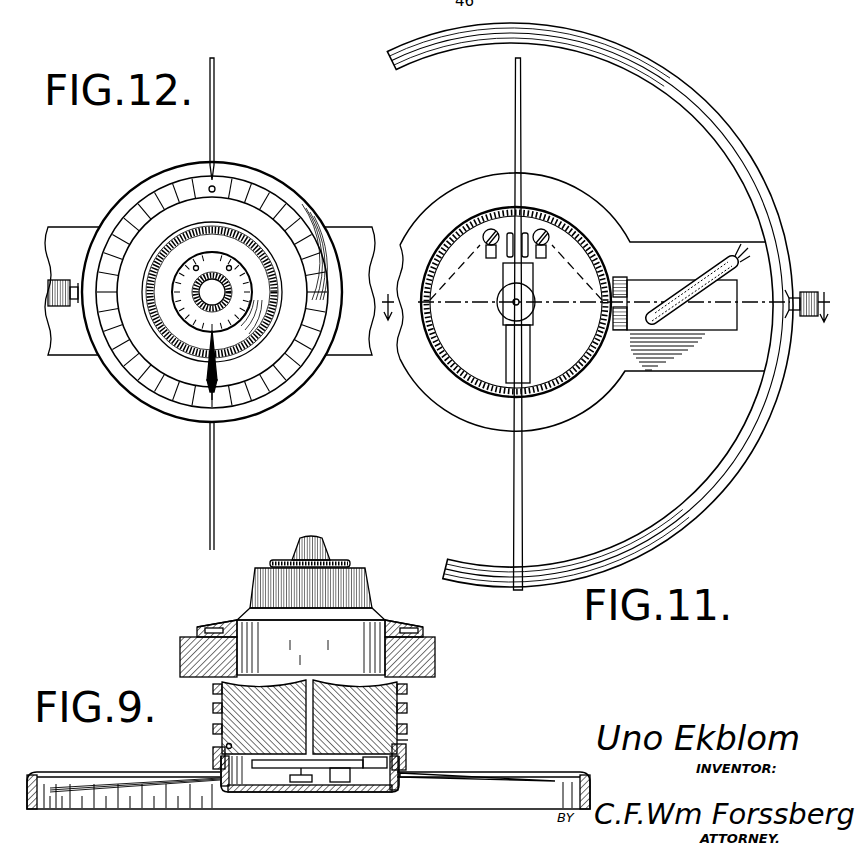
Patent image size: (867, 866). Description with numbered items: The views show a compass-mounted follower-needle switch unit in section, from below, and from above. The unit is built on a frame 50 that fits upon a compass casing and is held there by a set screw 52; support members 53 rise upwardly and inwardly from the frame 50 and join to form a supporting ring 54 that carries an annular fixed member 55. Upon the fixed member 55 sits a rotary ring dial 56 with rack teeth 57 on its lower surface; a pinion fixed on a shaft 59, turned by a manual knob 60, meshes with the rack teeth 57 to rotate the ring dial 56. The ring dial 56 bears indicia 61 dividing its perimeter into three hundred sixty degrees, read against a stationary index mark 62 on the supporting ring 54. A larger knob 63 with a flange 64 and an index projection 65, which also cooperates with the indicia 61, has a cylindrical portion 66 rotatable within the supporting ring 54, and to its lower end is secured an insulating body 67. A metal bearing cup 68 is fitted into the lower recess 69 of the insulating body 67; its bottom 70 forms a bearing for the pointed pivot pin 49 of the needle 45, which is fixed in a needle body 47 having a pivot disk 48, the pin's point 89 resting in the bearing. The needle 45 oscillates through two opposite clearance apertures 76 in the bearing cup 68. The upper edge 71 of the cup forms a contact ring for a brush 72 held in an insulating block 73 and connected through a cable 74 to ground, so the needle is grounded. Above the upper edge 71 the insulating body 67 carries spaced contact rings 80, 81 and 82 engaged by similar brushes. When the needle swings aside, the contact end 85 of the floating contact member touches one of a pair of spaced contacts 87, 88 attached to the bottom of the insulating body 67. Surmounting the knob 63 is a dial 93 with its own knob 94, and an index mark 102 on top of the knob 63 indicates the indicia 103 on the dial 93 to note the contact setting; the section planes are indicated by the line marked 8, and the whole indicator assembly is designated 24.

In FIG. 11, the section line 8- 8 is at (606, 312).
In FIG. 12, the dial indicator assembly 24 is at (118, 401).
In FIG. 9, the dial indicator assembly 24 is at (359, 548).
In FIG. 12, the needle 45 is at (216, 110).
In FIG. 11, the needle 45 is at (522, 510).
In FIG. 9, the needle 45 is at (504, 773).
In FIG. 11, the needle body 47 is at (500, 326).
In FIG. 9, the needle body 47 is at (344, 782).
In FIG. 11, the pivot disk 48 is at (530, 310).
In FIG. 9, the pivot disk 48 is at (300, 782).
In FIG. 9, the pivot pin 49 is at (309, 717).
In FIG. 11, the frame 50 is at (716, 508).
In FIG. 9, the frame 50 is at (150, 808).
In FIG. 11, the set screw 52 is at (810, 292).
In FIG. 12, the support members 53 is at (76, 228).
In FIG. 11, the support members 53 is at (686, 371).
In FIG. 11, the supporting ring 54 is at (620, 381).
In FIG. 9, the supporting ring 54 is at (436, 672).
In FIG. 12, the annular fixed member 55 is at (284, 400).
In FIG. 9, the annular fixed member 55 is at (436, 642).
In FIG. 12, the ring dial 56 is at (312, 368).
In FIG. 9, the ring dial 56 is at (202, 624).
In FIG. 9, the rack teeth 57 is at (180, 645).
In FIG. 12, the shaft 59 is at (74, 300).
In FIG. 12, the manual knob 60 is at (60, 280).
In FIG. 12, the indicia 61 is at (270, 190).
In FIG. 12, the stationary index mark 62 is at (203, 161).
In FIG. 12, the knob 63 is at (238, 234).
In FIG. 9, the knob 63 is at (369, 596).
In FIG. 12, the flange 64 is at (212, 286).
In FIG. 9, the flange 64 is at (388, 619).
In FIG. 12, the index projection 65 is at (206, 382).
In FIG. 9, the index projection 65 is at (240, 615).
In FIG. 9, the cylindrical portion 66 is at (311, 647).
In FIG. 9, the insulating body 67 is at (409, 740).
In FIG. 11, the bearing cup 68 is at (556, 386).
In FIG. 9, the bearing cup 68 is at (222, 792).
In FIG. 9, the lower recess 69 is at (212, 746).
In FIG. 9, the bottom 70 is at (330, 782).
In FIG. 11, the upper edge 71 is at (446, 370).
In FIG. 9, the upper edge 71 is at (409, 755).
In FIG. 11, the brush 72 is at (620, 278).
In FIG. 11, the insulating block 73 is at (660, 286).
In FIG. 11, the cable 74 is at (723, 260).
In FIG. 11, the clearance apertures 76 is at (538, 220).
In FIG. 9, the clearance apertures 76 is at (397, 780).
In FIG. 9, the contact ring 80 is at (408, 690).
In FIG. 9, the contact ring 81 is at (212, 708).
In FIG. 9, the contact ring 82 is at (410, 730).
In FIG. 11, the contact end 85 is at (508, 234).
In FIG. 11, the contact 87 is at (544, 258).
In FIG. 11, the contact 88 is at (488, 258).
In FIG. 9, the contact 88 is at (372, 790).
In FIG. 11, the point 89 is at (512, 300).
In FIG. 12, the dial 93 is at (217, 293).
In FIG. 9, the dial 93 is at (280, 560).
In FIG. 12, the knob 94 is at (212, 292).
In FIG. 9, the knob 94 is at (310, 538).
In FIG. 12, the index mark 102 is at (205, 355).
In FIG. 12, the indicia 103 is at (232, 254).